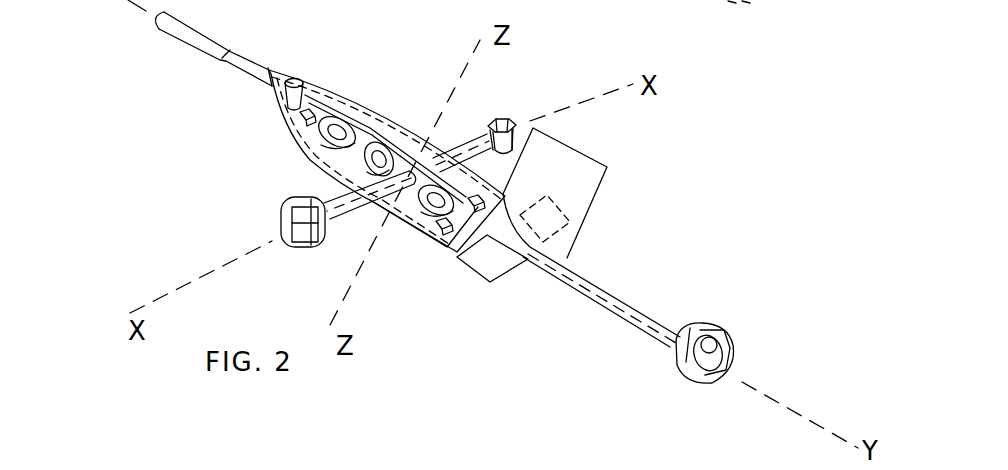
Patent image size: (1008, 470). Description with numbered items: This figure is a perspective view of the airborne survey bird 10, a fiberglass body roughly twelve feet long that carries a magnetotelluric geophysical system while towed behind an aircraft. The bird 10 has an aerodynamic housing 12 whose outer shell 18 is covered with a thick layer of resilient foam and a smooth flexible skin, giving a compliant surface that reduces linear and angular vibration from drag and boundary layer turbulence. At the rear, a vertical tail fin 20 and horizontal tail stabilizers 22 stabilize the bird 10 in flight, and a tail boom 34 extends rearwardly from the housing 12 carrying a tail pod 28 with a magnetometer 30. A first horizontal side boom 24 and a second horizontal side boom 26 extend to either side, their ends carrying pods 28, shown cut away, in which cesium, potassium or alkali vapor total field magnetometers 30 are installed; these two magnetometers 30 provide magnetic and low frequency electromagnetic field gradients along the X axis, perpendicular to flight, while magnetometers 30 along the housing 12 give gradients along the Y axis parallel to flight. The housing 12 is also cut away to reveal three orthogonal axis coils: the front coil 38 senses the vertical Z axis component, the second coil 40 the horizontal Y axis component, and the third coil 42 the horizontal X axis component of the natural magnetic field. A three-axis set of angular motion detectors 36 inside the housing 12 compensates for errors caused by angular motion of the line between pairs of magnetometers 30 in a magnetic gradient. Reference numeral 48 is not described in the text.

The survey bird 10 is at (586, 100).
The aerodynamic housing 12 is at (457, 252).
The outer shell 18 is at (302, 137).
The vertical tail fin 20 is at (583, 170).
The horizontal tail stabilizers 22 is at (552, 225).
The first horizontal side boom 24 is at (355, 205).
The second horizontal side boom 26 is at (463, 150).
The pods 28 is at (507, 121).
The total field magnetometers 30 is at (297, 83).
The tail boom 34 is at (623, 307).
The angular motion detectors 36 is at (302, 115).
The front coil 38 is at (342, 127).
The second coil 40 is at (382, 148).
The third coil 42 is at (418, 209).
The handle tube 48 is at (185, 35).